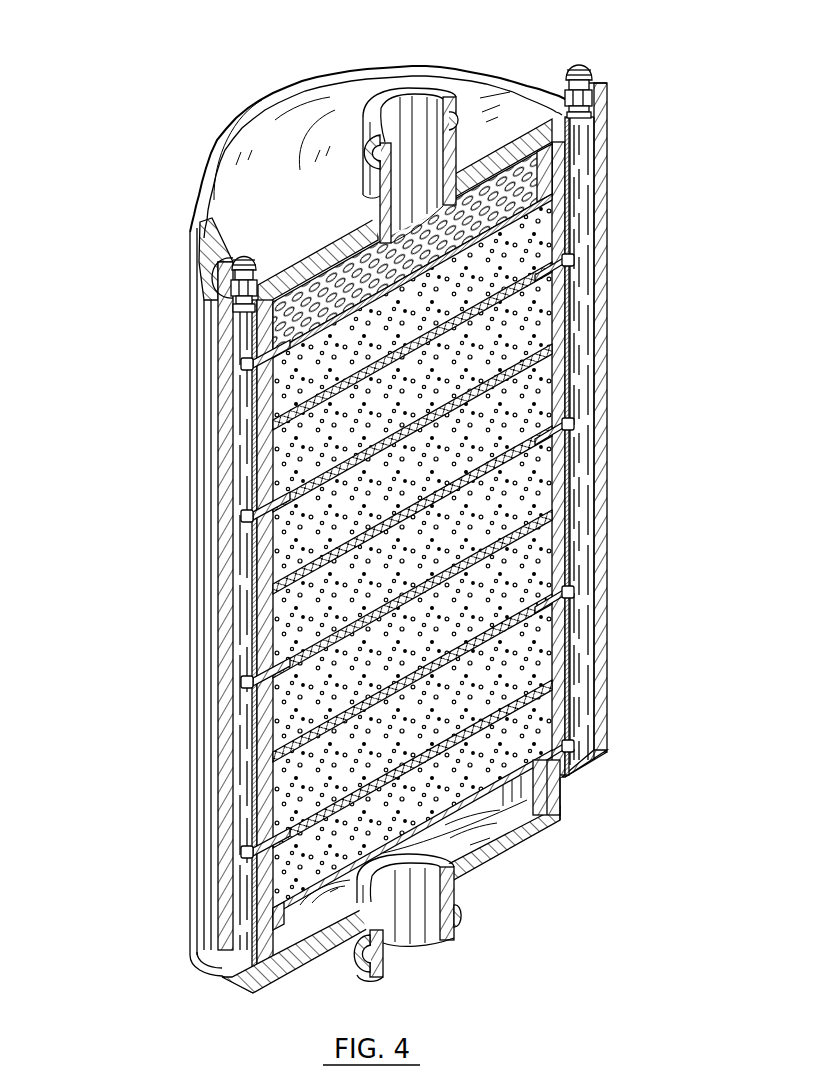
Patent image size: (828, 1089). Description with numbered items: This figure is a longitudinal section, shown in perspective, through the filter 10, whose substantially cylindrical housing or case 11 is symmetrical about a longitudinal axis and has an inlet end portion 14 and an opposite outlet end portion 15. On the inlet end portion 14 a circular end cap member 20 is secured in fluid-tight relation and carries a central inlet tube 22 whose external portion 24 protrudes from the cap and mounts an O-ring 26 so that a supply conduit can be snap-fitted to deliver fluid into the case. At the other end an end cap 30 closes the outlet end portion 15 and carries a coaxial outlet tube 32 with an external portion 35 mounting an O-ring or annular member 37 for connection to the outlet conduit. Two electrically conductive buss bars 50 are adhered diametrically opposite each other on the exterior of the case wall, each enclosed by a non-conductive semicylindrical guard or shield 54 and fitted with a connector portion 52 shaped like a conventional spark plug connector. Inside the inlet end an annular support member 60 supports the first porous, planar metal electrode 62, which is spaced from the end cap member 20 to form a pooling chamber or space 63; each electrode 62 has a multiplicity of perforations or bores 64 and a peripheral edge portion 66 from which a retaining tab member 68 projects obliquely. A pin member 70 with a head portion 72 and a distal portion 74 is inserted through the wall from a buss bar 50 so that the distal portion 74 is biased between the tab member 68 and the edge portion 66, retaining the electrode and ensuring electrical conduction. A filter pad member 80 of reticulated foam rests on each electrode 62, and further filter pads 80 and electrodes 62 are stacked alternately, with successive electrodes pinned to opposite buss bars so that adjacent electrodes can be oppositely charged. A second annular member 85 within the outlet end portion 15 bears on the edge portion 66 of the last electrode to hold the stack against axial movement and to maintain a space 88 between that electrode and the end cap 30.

The filter 10 is at (178, 276).
The housing or case 11 is at (196, 230).
The inlet end portion 14 is at (561, 823).
The outlet end portion 15 is at (502, 78).
The end cap member 20 is at (513, 846).
The inlet tube 22 is at (455, 888).
The external portion 24 is at (383, 977).
The O-ring 26 is at (355, 960).
The end cap 30 is at (262, 166).
The outlet tube 32 is at (394, 90).
The external portion 35 is at (427, 95).
The O-ring or annular member 37 is at (368, 150).
The buss bar 50 is at (562, 308).
The connector portion 52 is at (590, 66).
The guard or shield 54 is at (604, 137).
The annular support member 60 is at (556, 786).
The electrode 62 is at (313, 478).
The pooling chamber or space 63 is at (498, 855).
The perforations or bores 64 is at (365, 265).
The peripheral edge portion 66 is at (267, 588).
The retaining tab member 68 is at (286, 346).
The pin member 70 is at (274, 860).
The head portion 72 is at (241, 853).
The distal portion 74 is at (291, 834).
The filter pad member 80 is at (446, 451).
The second annular member 85 is at (546, 172).
The space 88 is at (470, 230).